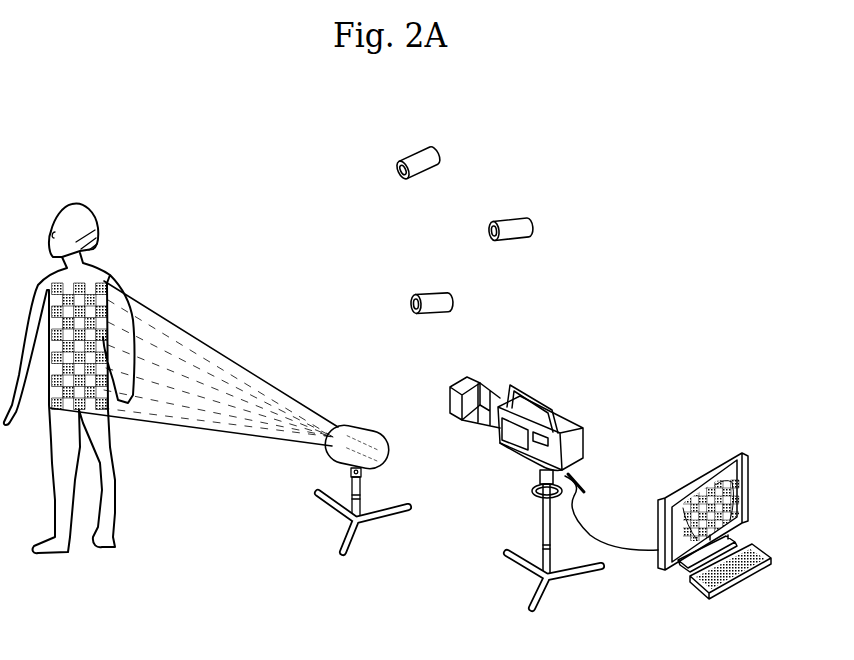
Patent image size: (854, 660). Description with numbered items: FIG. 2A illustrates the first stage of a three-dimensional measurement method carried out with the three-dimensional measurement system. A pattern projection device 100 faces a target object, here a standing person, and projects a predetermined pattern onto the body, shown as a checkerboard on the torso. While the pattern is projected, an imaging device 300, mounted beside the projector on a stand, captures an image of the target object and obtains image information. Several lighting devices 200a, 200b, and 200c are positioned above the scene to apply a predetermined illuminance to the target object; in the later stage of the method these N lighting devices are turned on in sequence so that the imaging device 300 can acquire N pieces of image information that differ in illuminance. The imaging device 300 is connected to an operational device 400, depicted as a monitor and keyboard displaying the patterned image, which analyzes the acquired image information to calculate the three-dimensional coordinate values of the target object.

The pattern projection device 100 is at (358, 430).
The lighting device 200a is at (418, 162).
The lighting device 200b is at (513, 225).
The lighting device 200c is at (442, 304).
The imaging device 300 is at (576, 432).
The operational device 400 is at (727, 460).